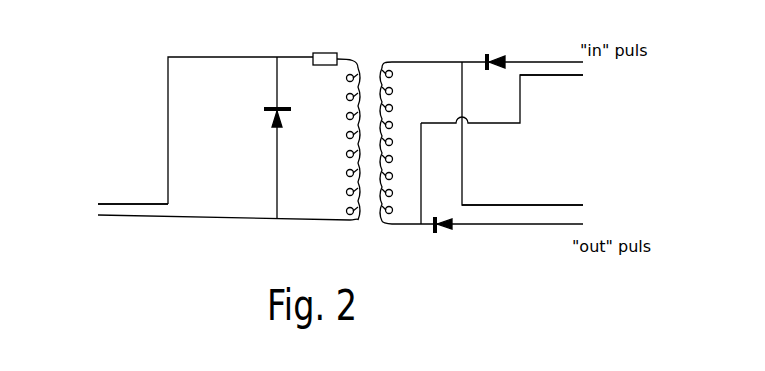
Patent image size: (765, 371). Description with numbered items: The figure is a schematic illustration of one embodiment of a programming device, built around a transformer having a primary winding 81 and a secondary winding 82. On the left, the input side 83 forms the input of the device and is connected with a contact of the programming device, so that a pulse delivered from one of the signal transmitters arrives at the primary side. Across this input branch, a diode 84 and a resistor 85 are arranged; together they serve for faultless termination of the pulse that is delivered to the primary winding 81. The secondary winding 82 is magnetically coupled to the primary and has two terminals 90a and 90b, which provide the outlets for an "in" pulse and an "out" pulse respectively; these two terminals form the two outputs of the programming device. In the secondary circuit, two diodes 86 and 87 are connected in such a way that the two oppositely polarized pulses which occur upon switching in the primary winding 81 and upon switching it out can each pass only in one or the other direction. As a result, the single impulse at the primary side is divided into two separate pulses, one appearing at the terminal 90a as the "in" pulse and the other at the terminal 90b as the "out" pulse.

The primary winding 81 is at (357, 140).
The secondary winding 82 is at (481, 143).
The input side 83 is at (205, 207).
The diode 84 is at (288, 138).
The resistor 85 is at (337, 46).
The diode 86 is at (502, 49).
The diode 87 is at (440, 239).
The terminal 90a is at (575, 72).
The terminal 90b is at (544, 215).